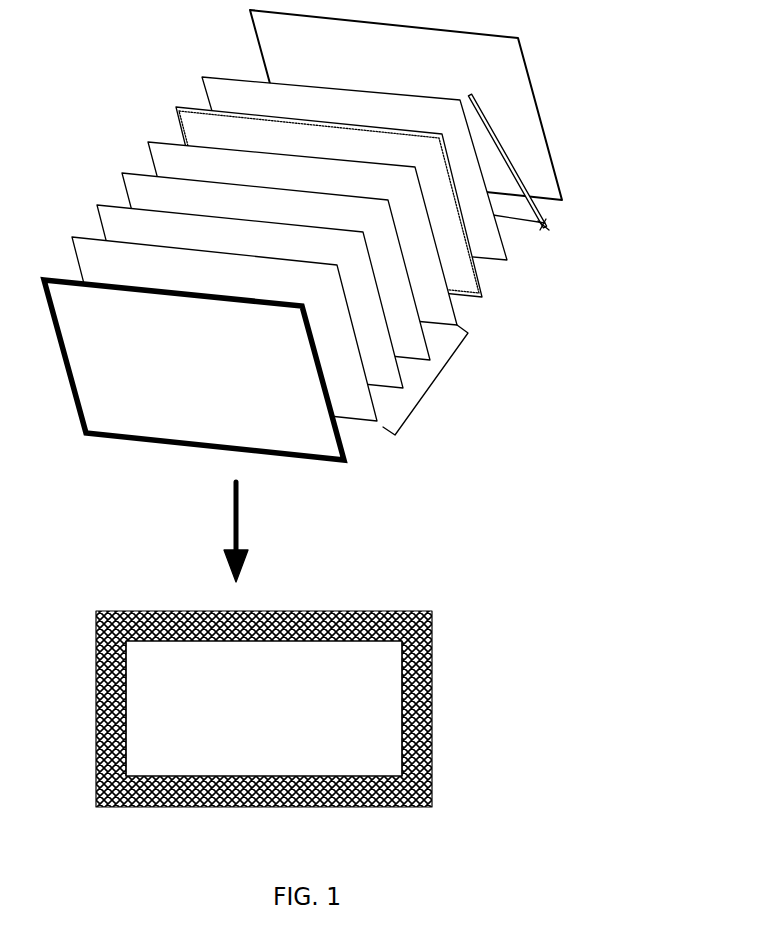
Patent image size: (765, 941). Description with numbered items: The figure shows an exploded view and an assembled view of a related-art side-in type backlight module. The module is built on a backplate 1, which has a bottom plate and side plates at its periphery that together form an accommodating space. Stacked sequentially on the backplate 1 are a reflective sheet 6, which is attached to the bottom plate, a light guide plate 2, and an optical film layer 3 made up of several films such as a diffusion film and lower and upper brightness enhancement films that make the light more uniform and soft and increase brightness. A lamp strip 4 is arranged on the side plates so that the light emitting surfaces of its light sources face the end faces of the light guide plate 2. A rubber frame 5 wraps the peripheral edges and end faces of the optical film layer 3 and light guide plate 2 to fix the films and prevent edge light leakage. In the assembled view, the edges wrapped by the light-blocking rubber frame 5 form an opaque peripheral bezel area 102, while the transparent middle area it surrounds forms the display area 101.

The backplate 1 is at (549, 147).
The light guide plate 2 is at (487, 305).
The optical film layer 3 is at (433, 387).
The lamp strip 4 is at (542, 225).
The rubber frame 5 is at (346, 462).
The reflective sheet 6 is at (510, 266).
The display area 101 is at (313, 650).
The peripheral bezel area 102 is at (428, 637).